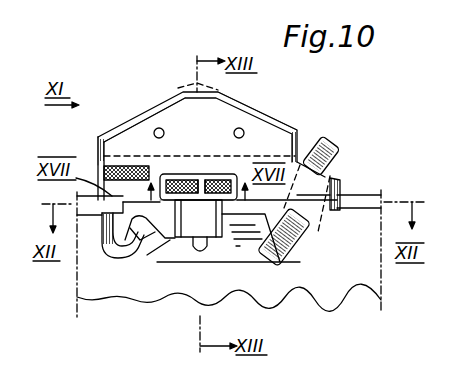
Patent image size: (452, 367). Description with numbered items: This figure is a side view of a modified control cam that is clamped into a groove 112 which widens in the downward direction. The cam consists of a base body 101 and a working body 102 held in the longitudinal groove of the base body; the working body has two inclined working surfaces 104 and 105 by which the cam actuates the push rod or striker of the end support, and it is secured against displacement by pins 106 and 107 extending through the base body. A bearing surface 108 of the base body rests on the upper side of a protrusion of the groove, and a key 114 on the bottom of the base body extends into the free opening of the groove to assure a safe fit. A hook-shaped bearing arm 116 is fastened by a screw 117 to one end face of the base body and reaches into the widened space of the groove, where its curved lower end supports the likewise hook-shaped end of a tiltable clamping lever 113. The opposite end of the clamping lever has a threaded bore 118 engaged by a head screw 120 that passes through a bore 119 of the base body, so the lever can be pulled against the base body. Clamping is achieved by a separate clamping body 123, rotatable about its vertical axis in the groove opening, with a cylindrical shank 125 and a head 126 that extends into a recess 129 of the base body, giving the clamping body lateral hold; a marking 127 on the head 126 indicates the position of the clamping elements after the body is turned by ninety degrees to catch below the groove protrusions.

The base body 101 is at (103, 137).
The working body 102 is at (147, 115).
The inclined working surface 104 is at (251, 106).
The inclined working surface 105 is at (123, 122).
The pin 106 is at (159, 128).
The pin 107 is at (245, 131).
The bearing surface 108 is at (341, 182).
The groove 112 is at (366, 278).
The clamping lever 113 is at (236, 255).
The key 114 is at (333, 220).
The bearing arm 116 is at (113, 258).
The screw 117 is at (103, 167).
The threaded bore 118 is at (298, 250).
The bore 119 is at (316, 173).
The head screw 120 is at (326, 144).
The clamping body 123 is at (196, 230).
The cylindrical shank 125 is at (163, 255).
The head 126 is at (225, 174).
The marking 127 is at (202, 180).
The recess 129 is at (177, 174).